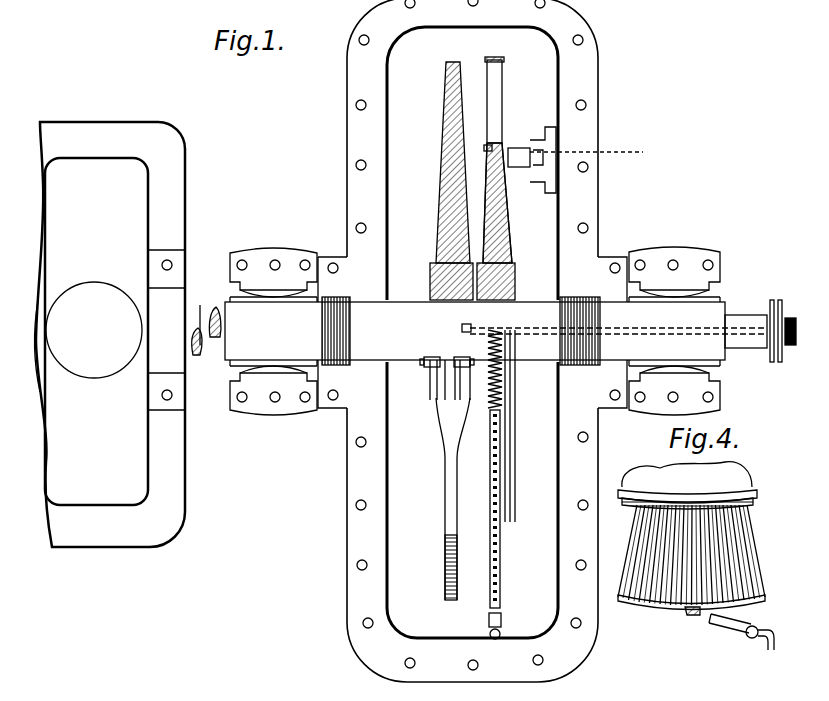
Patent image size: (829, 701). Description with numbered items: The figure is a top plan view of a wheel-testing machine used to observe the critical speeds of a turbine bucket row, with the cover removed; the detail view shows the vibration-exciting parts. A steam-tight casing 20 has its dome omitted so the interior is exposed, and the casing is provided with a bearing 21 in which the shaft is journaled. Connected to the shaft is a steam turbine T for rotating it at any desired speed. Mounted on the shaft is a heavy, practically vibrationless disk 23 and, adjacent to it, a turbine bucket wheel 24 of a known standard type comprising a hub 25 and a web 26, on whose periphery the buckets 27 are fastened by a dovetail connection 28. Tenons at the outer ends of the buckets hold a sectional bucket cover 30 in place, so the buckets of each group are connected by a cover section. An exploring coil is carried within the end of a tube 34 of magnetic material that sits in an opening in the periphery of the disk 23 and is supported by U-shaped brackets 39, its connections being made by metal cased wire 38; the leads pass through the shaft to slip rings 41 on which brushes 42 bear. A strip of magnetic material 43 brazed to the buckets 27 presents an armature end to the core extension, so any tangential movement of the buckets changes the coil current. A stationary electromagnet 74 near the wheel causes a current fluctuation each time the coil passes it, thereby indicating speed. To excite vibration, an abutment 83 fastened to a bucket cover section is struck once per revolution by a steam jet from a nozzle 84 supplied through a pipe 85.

In FIG. 1, the steam turbine T is at (134, 126).
In FIG. 1, the casing 20 is at (593, 84).
In FIG. 1, the bearing 21 is at (275, 398).
In FIG. 1, the disk 23 is at (446, 202).
In FIG. 1, the turbine bucket wheel 24 is at (507, 257).
In FIG. 1, the hub 25 is at (516, 286).
In FIG. 1, the web 26 is at (506, 232).
In FIG. 1, the buckets 27 is at (503, 86).
In FIG. 1, the dovetail connection 28 is at (497, 146).
In FIG. 1, the bucket cover 30 is at (504, 59).
In FIG. 1, the tube 34 is at (428, 368).
In FIG. 1, the metal cased wire 38 is at (430, 340).
In FIG. 1, the U-shaped brackets 39 is at (466, 372).
In FIG. 1, the slip rings 41 is at (781, 358).
In FIG. 1, the brushes 42 is at (776, 305).
In FIG. 1, the strip of magnetic material 43 is at (465, 326).
In FIG. 1, the electromagnet 74 is at (519, 167).
In FIG. 1, the abutment 83 is at (500, 608).
In FIG. 4, the abutment 83 is at (690, 616).
In FIG. 1, the nozzle 84 is at (501, 627).
In FIG. 4, the nozzle 84 is at (735, 634).
In FIG. 1, the pipe 85 is at (488, 638).
In FIG. 4, the pipe 85 is at (766, 633).